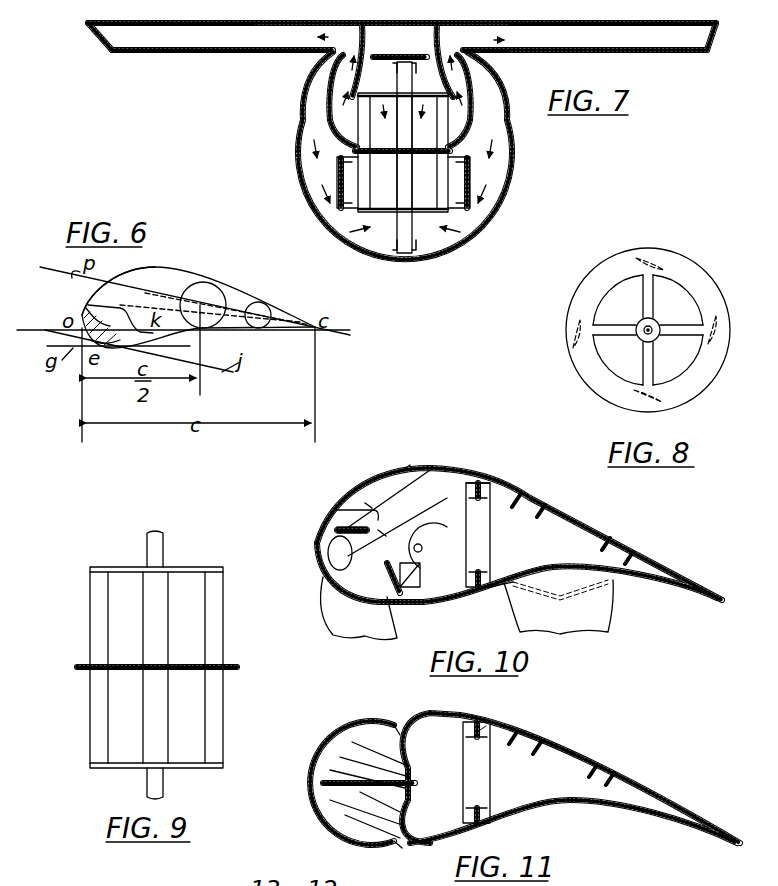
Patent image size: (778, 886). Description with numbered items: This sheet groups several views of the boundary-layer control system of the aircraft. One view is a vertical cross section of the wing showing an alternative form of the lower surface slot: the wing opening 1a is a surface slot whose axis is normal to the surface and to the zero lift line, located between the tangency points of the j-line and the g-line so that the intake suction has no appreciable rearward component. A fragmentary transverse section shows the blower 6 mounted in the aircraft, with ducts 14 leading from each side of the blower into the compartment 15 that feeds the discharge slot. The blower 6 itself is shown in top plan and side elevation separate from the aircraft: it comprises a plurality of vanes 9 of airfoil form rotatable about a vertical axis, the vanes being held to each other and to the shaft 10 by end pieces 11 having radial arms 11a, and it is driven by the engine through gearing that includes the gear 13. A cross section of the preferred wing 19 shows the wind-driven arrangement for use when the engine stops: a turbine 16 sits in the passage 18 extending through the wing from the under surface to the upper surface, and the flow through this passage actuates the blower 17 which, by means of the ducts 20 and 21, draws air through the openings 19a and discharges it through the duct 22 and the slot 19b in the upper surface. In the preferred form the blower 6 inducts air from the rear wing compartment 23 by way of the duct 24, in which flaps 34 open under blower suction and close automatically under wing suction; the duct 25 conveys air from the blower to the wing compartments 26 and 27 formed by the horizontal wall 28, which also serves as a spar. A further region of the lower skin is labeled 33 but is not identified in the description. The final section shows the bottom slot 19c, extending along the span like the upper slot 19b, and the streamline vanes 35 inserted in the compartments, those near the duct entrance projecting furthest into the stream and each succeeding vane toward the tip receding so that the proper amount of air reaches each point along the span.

In FIG. 6, the wing opening 1a is at (85, 303).
In FIG. 8, the blower 6 is at (695, 397).
In FIG. 9, the blower 6 is at (223, 585).
In FIG. 8, the vanes 9 is at (648, 260).
In FIG. 9, the vanes 9 is at (98, 718).
In FIG. 8, the shaft 10 is at (645, 325).
In FIG. 9, the shaft 10 is at (162, 788).
In FIG. 8, the end pieces 11 is at (705, 292).
In FIG. 8, the radial arms 11a is at (652, 353).
In FIG. 9, the gear 13 is at (107, 665).
In FIG. 7, the ducts 14 is at (343, 92).
In FIG. 11, the compartment 15 is at (427, 883).
In FIG. 10, the turbine 16 is at (397, 520).
In FIG. 10, the blower 17 is at (417, 575).
In FIG. 10, the passage 18 is at (383, 590).
In FIG. 10, the wing 19 is at (670, 562).
In FIG. 10, the openings 19a is at (527, 520).
In FIG. 11, the openings 19a is at (561, 758).
In FIG. 10, the upper surface slot 19b is at (437, 440).
In FIG. 11, the upper surface slot 19b is at (400, 720).
In FIG. 11, the bottom slot 19c is at (397, 850).
In FIG. 10, the duct 20 is at (422, 552).
In FIG. 10, the duct 21 is at (503, 535).
In FIG. 10, the duct 22 is at (478, 485).
In FIG. 10, the rear wing compartment 23 is at (645, 570).
In FIG. 10, the duct 24 is at (584, 630).
In FIG. 10, the duct 25 is at (367, 627).
In FIG. 10, the wing compartment 26 is at (340, 550).
In FIG. 10, the wing compartment 27 is at (353, 508).
In FIG. 10, the horizontal wall 28 is at (340, 528).
In FIG. 10, the lower skin region 33 is at (632, 610).
In FIG. 10, the flaps 34 is at (513, 582).
In FIG. 11, the streamline vanes 35 is at (377, 750).